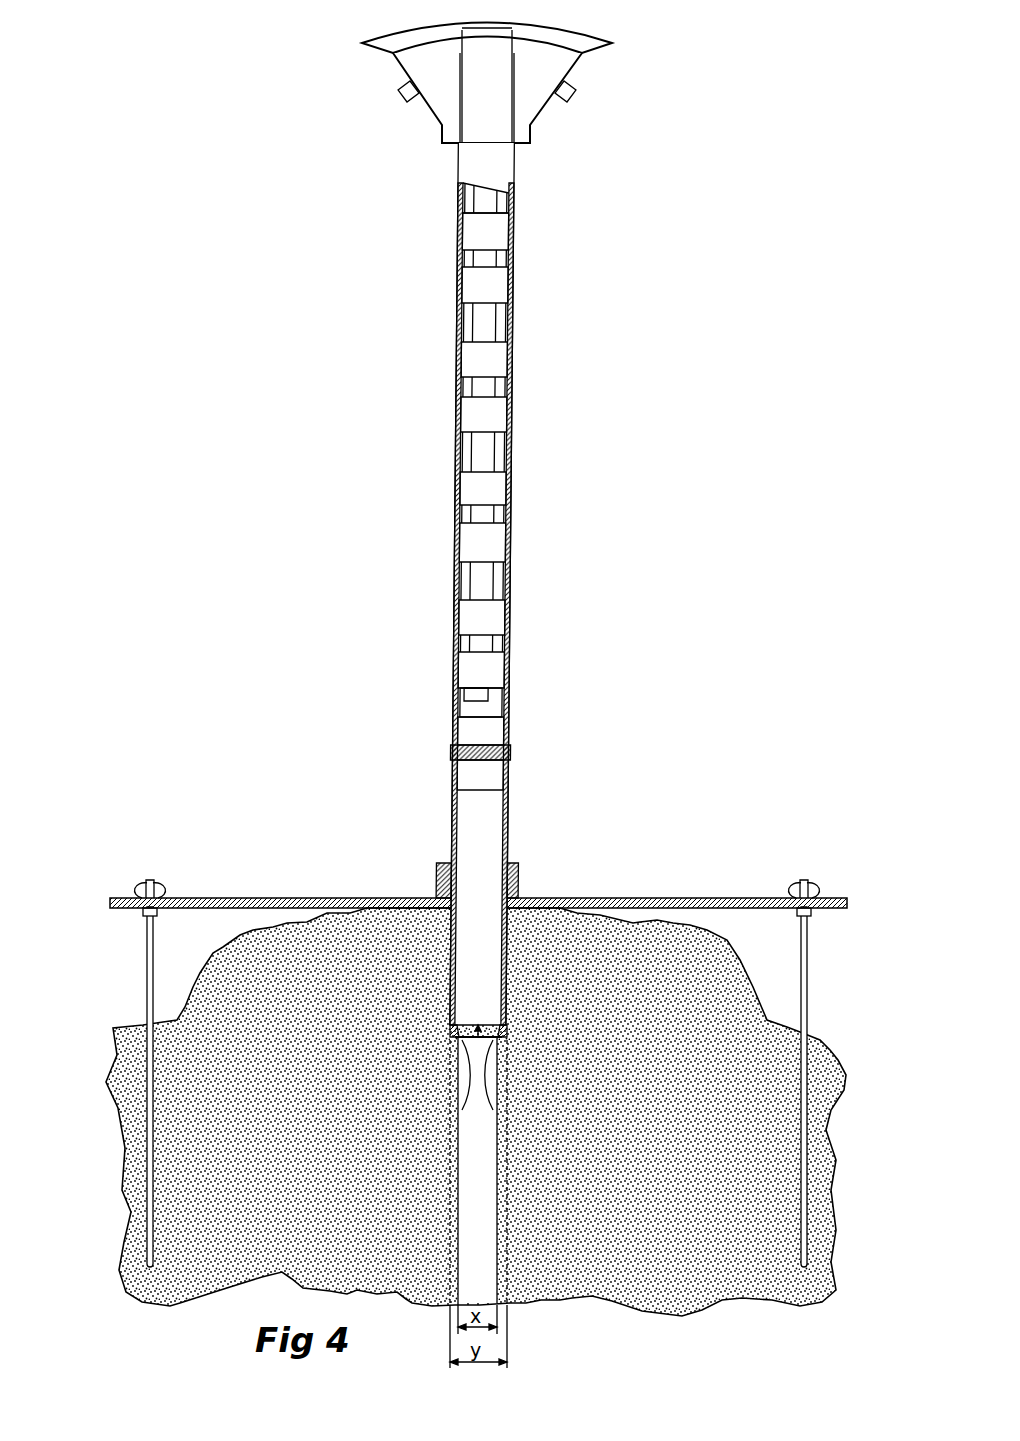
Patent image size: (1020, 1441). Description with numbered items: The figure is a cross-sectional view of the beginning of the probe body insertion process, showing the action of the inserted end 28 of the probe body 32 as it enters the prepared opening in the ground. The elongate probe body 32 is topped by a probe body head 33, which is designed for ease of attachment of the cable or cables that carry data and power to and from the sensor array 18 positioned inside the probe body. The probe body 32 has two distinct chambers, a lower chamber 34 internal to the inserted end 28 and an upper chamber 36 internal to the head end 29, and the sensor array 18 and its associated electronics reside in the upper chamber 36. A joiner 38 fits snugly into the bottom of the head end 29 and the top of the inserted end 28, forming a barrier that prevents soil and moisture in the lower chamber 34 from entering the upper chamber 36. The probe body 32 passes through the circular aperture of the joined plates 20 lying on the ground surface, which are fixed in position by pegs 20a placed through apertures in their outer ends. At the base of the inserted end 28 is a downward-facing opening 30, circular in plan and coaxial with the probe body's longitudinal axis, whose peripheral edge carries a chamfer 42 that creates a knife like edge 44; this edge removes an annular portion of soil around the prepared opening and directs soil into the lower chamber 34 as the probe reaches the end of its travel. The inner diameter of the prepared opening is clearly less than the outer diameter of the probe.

The sensor array 18 is at (488, 413).
The separable plates 20 is at (610, 898).
The pegs 20a is at (808, 1000).
The inserted end 28 is at (506, 963).
The head end 29 is at (475, 155).
The opening 30 is at (500, 1128).
The probe body 32 is at (545, 345).
The probe body head 33 is at (475, 84).
The lower chamber 34 is at (487, 823).
The upper chamber 36 is at (485, 705).
The joiner 38 is at (487, 753).
The chamfer 42 is at (500, 1093).
The knife like edge 44 is at (506, 1050).